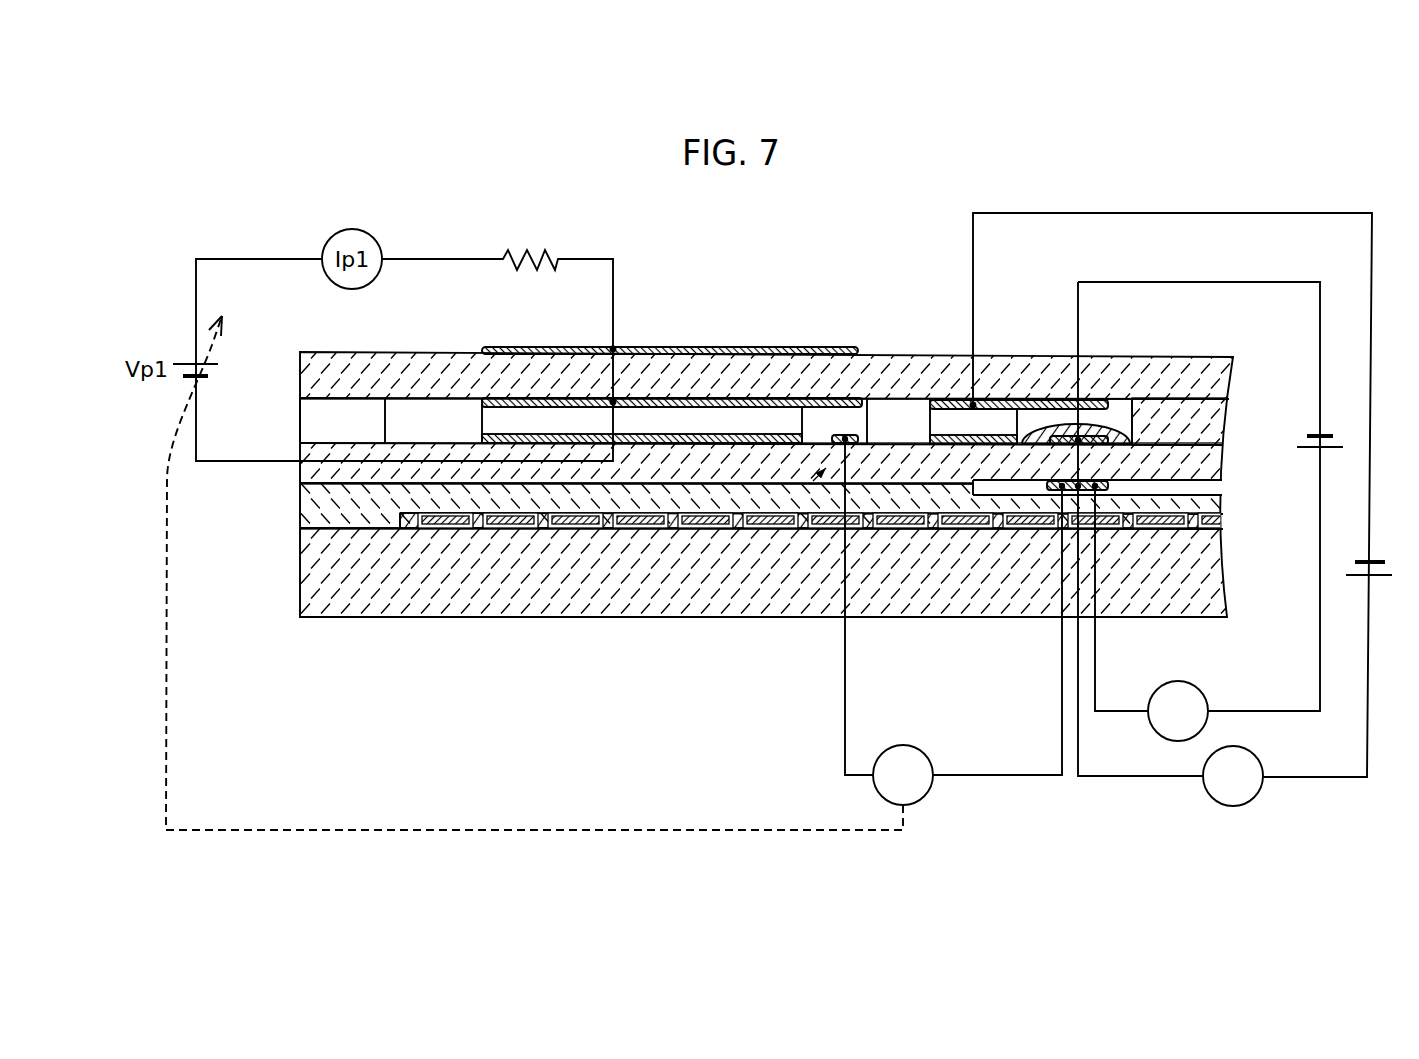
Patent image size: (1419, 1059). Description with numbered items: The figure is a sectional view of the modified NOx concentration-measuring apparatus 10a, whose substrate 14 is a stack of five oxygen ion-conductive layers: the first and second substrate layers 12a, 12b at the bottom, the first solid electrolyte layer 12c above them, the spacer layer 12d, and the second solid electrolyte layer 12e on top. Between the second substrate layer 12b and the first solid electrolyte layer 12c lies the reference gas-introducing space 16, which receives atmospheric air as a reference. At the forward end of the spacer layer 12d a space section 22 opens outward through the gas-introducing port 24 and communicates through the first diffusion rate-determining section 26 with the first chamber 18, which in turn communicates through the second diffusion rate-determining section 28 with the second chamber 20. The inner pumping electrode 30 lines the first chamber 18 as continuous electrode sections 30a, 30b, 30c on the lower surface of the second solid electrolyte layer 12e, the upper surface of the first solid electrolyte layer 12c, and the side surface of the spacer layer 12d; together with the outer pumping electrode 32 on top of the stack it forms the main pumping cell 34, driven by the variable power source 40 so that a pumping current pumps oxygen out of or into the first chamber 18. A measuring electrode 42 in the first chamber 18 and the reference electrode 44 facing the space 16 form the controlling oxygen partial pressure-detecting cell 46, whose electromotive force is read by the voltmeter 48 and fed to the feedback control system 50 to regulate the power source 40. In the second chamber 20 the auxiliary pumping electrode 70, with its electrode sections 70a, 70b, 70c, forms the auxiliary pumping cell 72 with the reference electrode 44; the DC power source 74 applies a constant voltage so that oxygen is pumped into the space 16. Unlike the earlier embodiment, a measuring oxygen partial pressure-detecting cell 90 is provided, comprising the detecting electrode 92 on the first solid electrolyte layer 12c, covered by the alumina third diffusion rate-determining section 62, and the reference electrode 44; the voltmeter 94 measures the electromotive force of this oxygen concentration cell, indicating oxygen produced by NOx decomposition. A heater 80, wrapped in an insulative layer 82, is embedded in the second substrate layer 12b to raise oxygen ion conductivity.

The NOx concentration-measuring apparatus 10a is at (893, 237).
The first substrate layer 12a is at (620, 612).
The second substrate layer 12b is at (698, 500).
The first solid electrolyte layer 12c is at (1193, 463).
The spacer layer 12d is at (1228, 427).
The second solid electrolyte layer 12e is at (1228, 388).
The substrate 14 is at (1174, 352).
The reference gas-introducing space 16 is at (1187, 487).
The first chamber 18 is at (813, 423).
The second chamber 20 is at (1040, 401).
The space section 22 is at (347, 427).
The gas-introducing port 24 is at (300, 424).
The first diffusion rate-determining section 26 is at (433, 430).
The second diffusion rate-determining section 28 is at (895, 430).
The inner pumping electrode 30 is at (666, 483).
The electrode section 30a is at (577, 347).
The electrode section 30b is at (523, 443).
The electrode section 30c is at (660, 422).
The outer pumping electrode 32 is at (693, 348).
The main pumping cell 34 is at (736, 342).
The variable power source 40 is at (190, 362).
The measuring electrode 42 is at (840, 433).
The reference electrode 44 is at (1042, 497).
The controlling oxygen partial pressure-detecting cell 46 is at (813, 481).
The voltmeter 48 is at (903, 745).
The feedback control system 50 is at (540, 829).
The third diffusion rate-determining section 62 is at (1108, 426).
The auxiliary pumping electrode 70 is at (986, 485).
The electrode section 70a is at (942, 401).
The electrode section 70b is at (962, 444).
The electrode section 70c is at (942, 428).
The auxiliary pumping cell 72 is at (1012, 345).
The DC power source 74 is at (1372, 557).
The heater 80 is at (437, 528).
The insulative layer 82 is at (475, 524).
The measuring oxygen partial pressure-detecting cell 90 is at (1124, 496).
The detecting electrode 92 is at (1110, 437).
The voltmeter 94 is at (1178, 681).